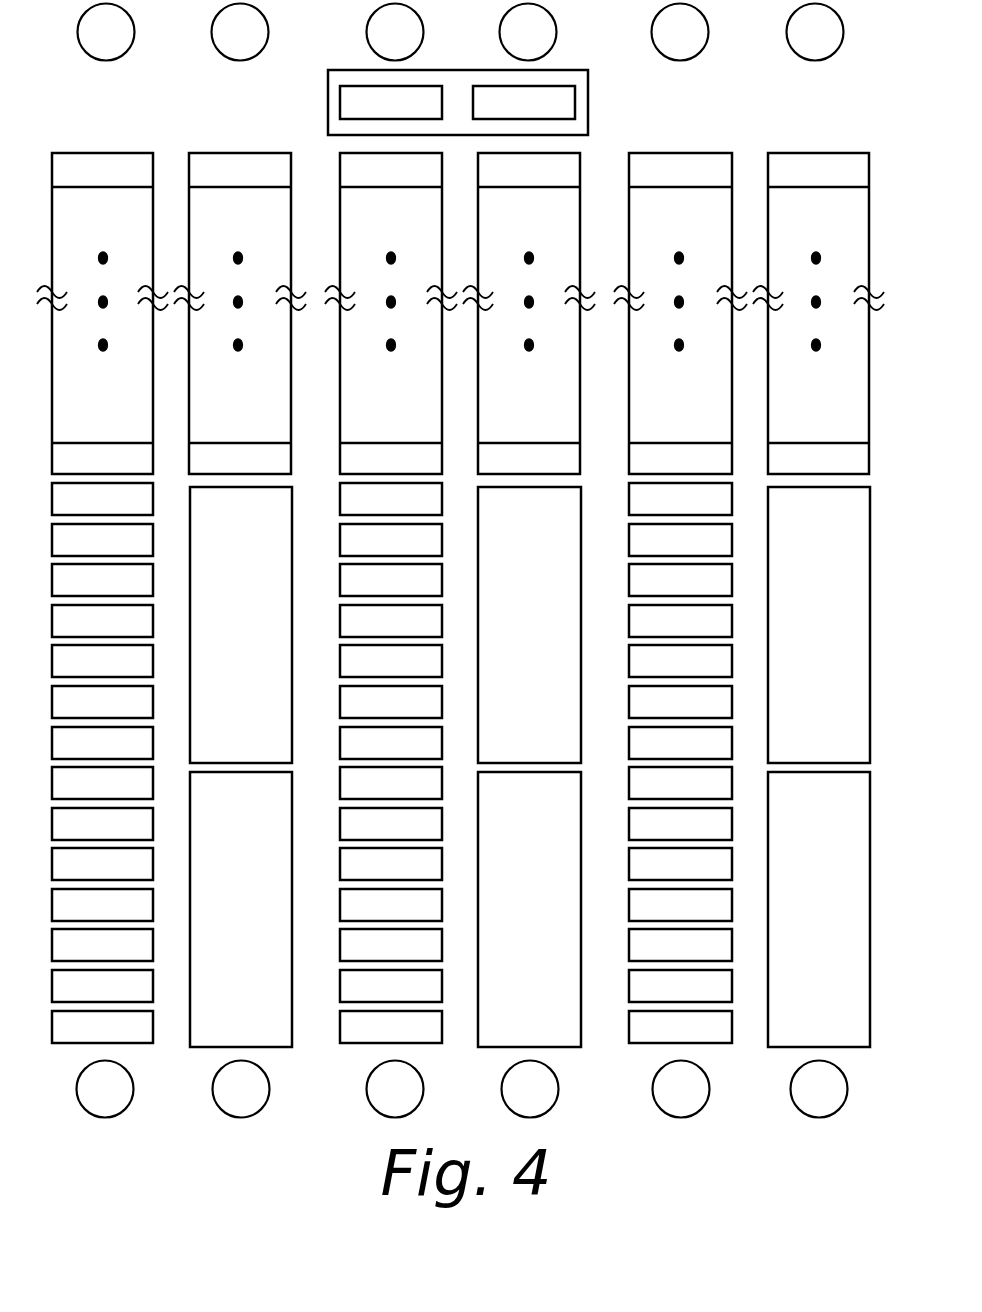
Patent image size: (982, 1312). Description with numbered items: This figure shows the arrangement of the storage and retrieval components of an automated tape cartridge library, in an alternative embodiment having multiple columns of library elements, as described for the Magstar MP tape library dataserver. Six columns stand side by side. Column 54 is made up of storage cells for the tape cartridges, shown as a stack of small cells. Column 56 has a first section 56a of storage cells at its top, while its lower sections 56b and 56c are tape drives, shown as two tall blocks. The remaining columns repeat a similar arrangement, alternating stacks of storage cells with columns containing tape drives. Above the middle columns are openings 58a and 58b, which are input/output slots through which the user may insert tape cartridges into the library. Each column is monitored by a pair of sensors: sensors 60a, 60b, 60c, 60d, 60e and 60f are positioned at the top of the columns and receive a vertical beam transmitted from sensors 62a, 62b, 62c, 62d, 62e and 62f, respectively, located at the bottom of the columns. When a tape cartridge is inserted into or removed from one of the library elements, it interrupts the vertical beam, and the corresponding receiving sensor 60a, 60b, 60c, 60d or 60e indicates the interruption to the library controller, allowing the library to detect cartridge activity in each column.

The column 54 is at (102, 136).
The column 56 is at (234, 136).
The first section 56a is at (259, 236).
The section 56b is at (260, 652).
The section 56c is at (260, 924).
The opening 58a is at (391, 102).
The opening 58b is at (524, 102).
The sensor 60a is at (106, 32).
The sensor 60b is at (240, 32).
The sensor 60c is at (395, 32).
The sensor 60d is at (528, 32).
The sensor 60e is at (680, 32).
The sensor 60f is at (815, 32).
The sensor 62a is at (105, 1089).
The sensor 62b is at (241, 1089).
The sensor 62c is at (395, 1089).
The sensor 62d is at (530, 1089).
The sensor 62e is at (681, 1089).
The sensor 62f is at (819, 1089).